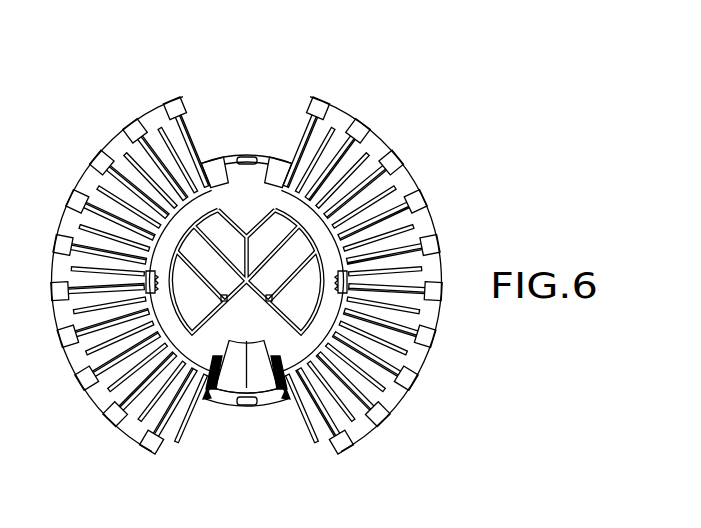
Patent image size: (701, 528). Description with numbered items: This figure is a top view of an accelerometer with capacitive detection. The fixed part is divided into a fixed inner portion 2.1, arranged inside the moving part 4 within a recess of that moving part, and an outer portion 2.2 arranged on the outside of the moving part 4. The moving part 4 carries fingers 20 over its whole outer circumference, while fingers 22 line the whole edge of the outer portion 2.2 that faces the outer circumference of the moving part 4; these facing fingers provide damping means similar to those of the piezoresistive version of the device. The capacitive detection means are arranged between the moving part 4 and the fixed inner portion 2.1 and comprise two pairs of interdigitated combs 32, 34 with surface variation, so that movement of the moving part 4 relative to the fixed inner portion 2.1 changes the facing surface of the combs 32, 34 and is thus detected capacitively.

The fixed inner portion 2.1 is at (233, 382).
The outer portion 2.2 is at (362, 131).
The moving part 4 is at (236, 202).
The fingers 20 is at (336, 136).
The fingers 22 is at (324, 140).
The interdigitated combs 32 is at (207, 395).
The interdigitated combs 34 is at (286, 398).